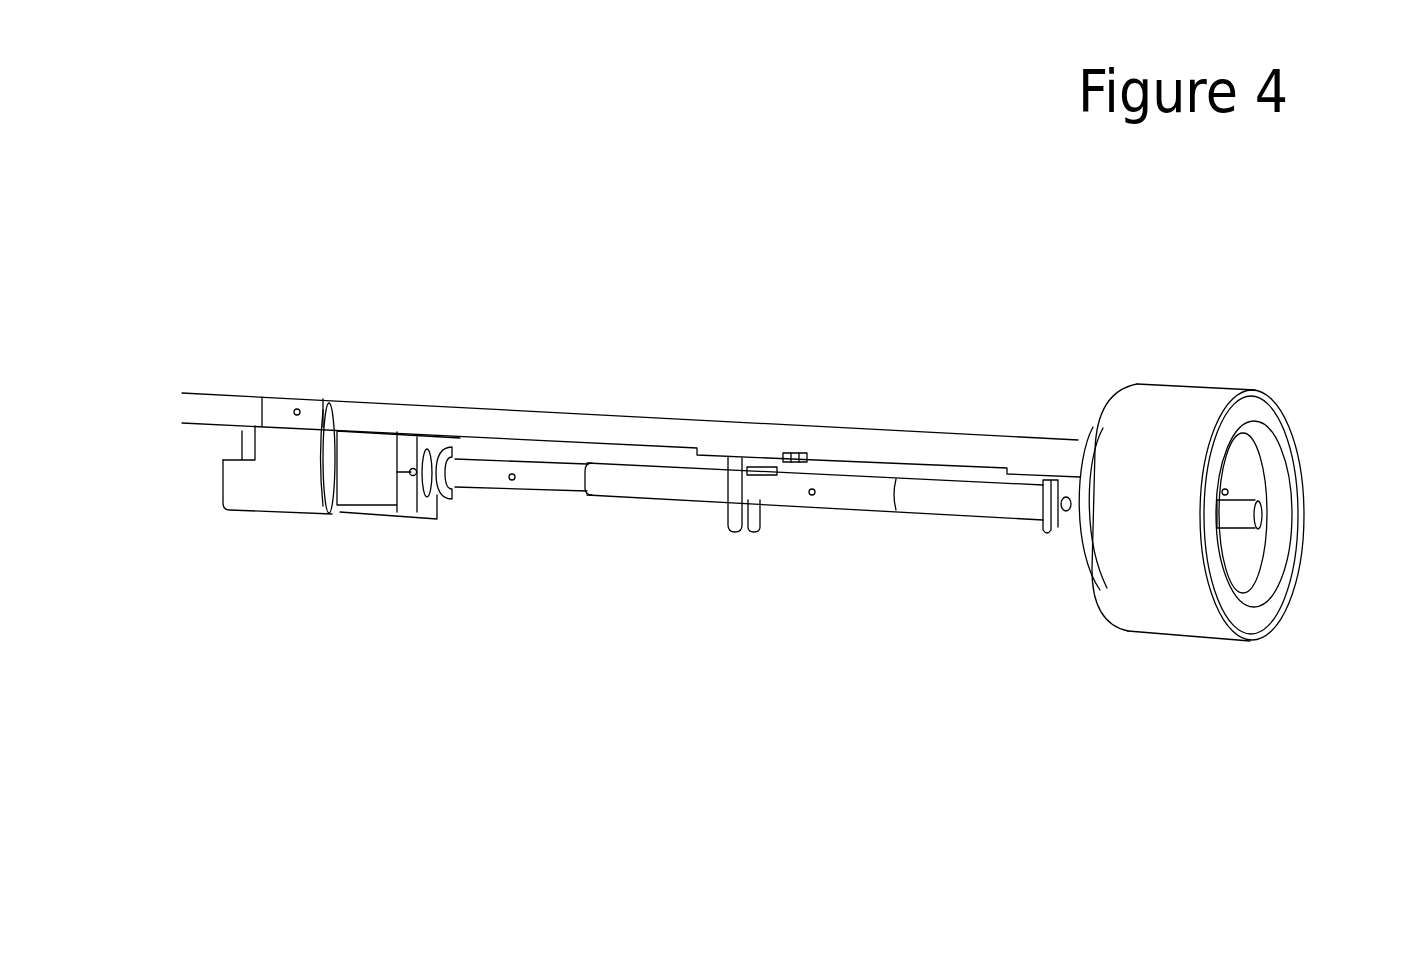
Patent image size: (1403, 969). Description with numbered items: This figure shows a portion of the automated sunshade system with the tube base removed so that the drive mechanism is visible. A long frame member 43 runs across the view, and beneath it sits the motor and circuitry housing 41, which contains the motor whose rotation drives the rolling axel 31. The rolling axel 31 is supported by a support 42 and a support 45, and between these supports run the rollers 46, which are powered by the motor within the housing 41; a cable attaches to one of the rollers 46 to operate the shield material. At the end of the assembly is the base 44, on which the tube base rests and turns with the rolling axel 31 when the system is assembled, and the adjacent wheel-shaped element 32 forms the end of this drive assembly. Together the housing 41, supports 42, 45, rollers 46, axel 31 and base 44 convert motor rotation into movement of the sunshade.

The rolling axel 31 is at (1243, 521).
The wheel 32 is at (1183, 397).
The motor and circuitry housing 41 is at (356, 484).
The support 42 is at (727, 513).
The frame rail 43 is at (494, 407).
The base 44 is at (1088, 455).
The support 45 is at (1053, 534).
The rollers 46 is at (522, 480).